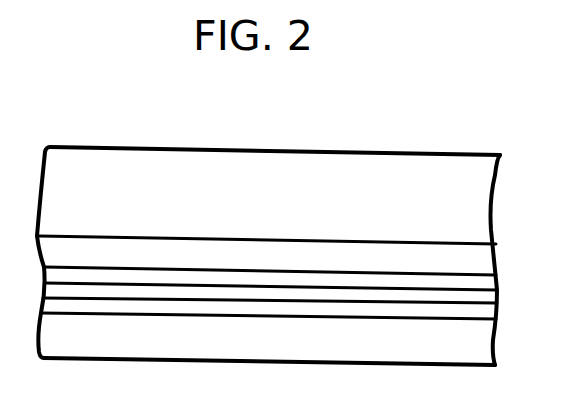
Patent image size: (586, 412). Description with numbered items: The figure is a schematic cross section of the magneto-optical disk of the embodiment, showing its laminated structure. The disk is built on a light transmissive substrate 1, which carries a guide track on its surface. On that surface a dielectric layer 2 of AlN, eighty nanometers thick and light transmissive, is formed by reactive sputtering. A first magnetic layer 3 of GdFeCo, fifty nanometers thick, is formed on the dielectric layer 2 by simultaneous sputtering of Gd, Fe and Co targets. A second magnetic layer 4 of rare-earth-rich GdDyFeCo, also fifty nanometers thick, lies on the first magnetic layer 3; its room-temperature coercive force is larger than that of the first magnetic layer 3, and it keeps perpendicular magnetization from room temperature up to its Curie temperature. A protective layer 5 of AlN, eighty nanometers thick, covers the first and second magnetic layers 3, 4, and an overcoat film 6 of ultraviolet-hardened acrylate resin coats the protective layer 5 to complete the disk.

The light transmissive substrate 1 is at (486, 173).
The dielectric layer 2 is at (486, 258).
The first magnetic layer 3 is at (489, 283).
The second magnetic layer 4 is at (491, 298).
The protective layer 5 is at (486, 317).
The overcoat film 6 is at (484, 357).